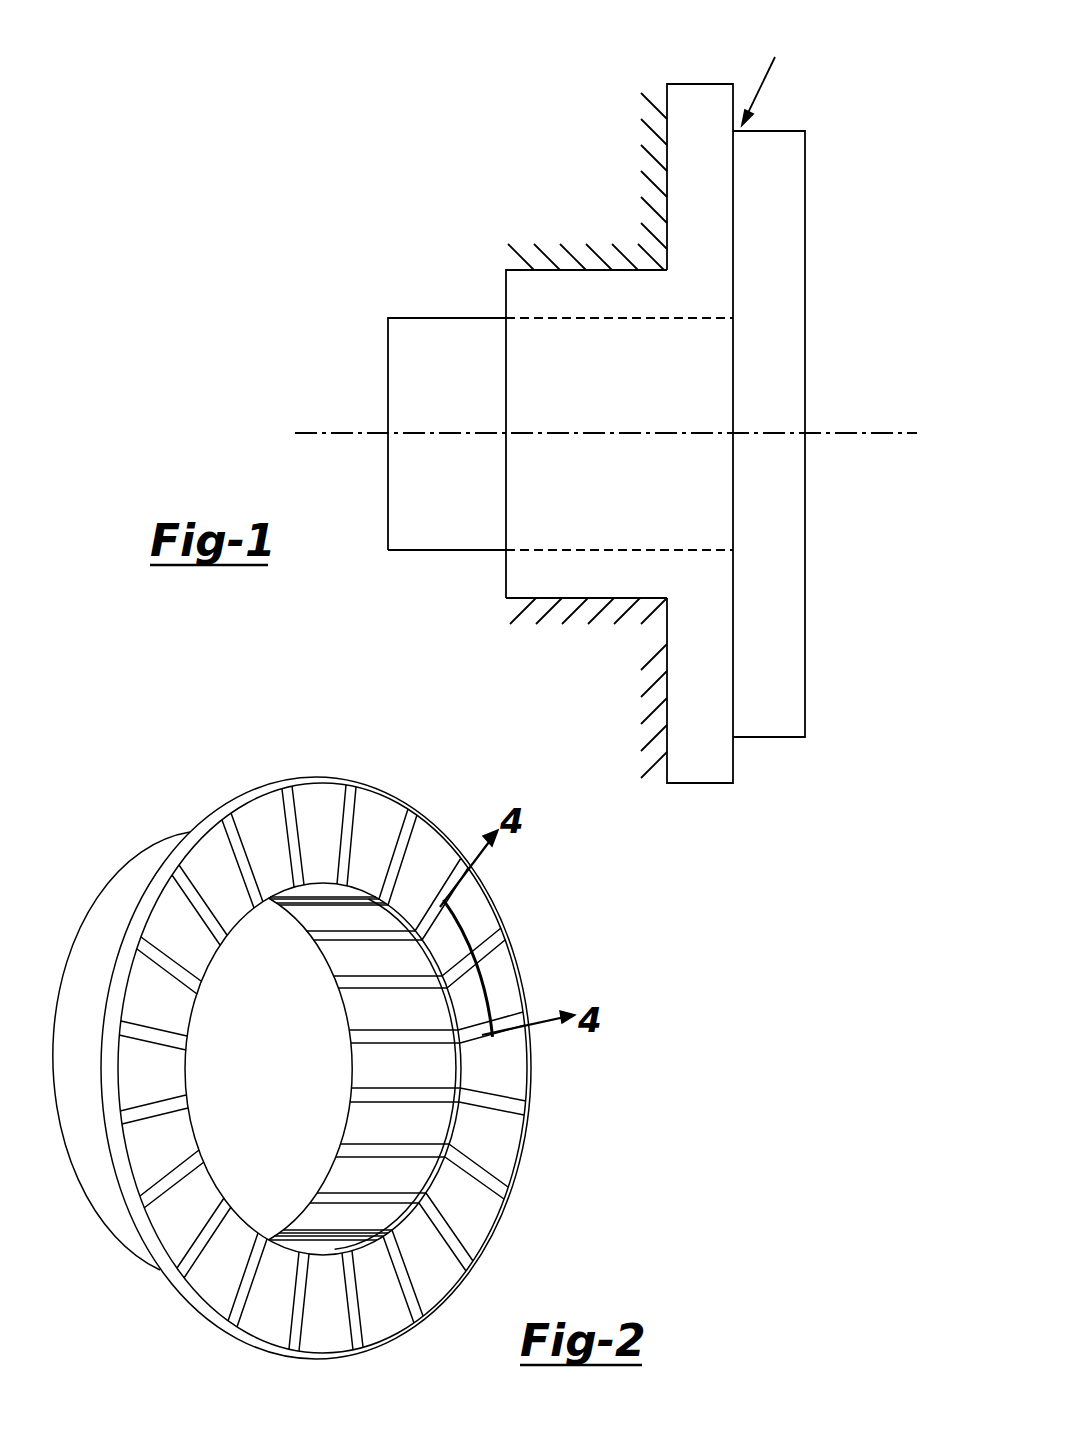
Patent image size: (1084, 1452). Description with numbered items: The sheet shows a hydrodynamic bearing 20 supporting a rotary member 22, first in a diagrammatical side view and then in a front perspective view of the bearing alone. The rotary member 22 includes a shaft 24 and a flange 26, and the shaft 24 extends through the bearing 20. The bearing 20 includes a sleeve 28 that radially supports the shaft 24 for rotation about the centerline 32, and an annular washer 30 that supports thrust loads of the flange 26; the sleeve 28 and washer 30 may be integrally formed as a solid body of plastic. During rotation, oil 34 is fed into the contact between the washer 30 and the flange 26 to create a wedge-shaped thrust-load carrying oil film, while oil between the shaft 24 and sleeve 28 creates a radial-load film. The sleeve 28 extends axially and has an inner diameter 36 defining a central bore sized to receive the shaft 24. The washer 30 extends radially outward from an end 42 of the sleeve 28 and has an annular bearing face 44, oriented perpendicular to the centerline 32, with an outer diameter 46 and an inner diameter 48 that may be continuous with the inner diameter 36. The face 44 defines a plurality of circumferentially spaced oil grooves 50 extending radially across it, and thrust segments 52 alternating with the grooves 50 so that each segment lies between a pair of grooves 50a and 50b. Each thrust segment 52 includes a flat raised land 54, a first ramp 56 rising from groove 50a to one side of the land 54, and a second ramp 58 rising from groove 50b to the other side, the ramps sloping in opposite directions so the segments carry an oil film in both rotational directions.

In FIG. 1, the hydrodynamic bearing 20 is at (614, 215).
In FIG. 1, the rotary member 22 is at (425, 525).
In FIG. 1, the shaft 24 is at (408, 338).
In FIG. 1, the flange 26 is at (781, 183).
In FIG. 1, the sleeve 28 is at (543, 281).
In FIG. 1, the annular washer 30 is at (697, 82).
In FIG. 1, the centerline 32 is at (857, 436).
In FIG. 1, the oil 34 is at (772, 80).
In FIG. 1, the inner diameter 36 is at (580, 320).
In FIG. 2, the inner diameter 36 is at (340, 1187).
In FIG. 1, the end 42 is at (664, 602).
In FIG. 2, the annular bearing face 44 is at (217, 1283).
In FIG. 2, the outer diameter 46 is at (253, 797).
In FIG. 2, the inner diameter 48 is at (435, 1180).
In FIG. 2, the oil grooves 50 is at (163, 947).
In FIG. 2, the groove 50a is at (508, 1010).
In FIG. 2, the groove 50b is at (460, 887).
In FIG. 2, the thrust segments 52 is at (415, 852).
In FIG. 2, the land 54 is at (293, 853).
In FIG. 2, the first ramp 56 is at (273, 833).
In FIG. 2, the second ramp 58 is at (323, 807).